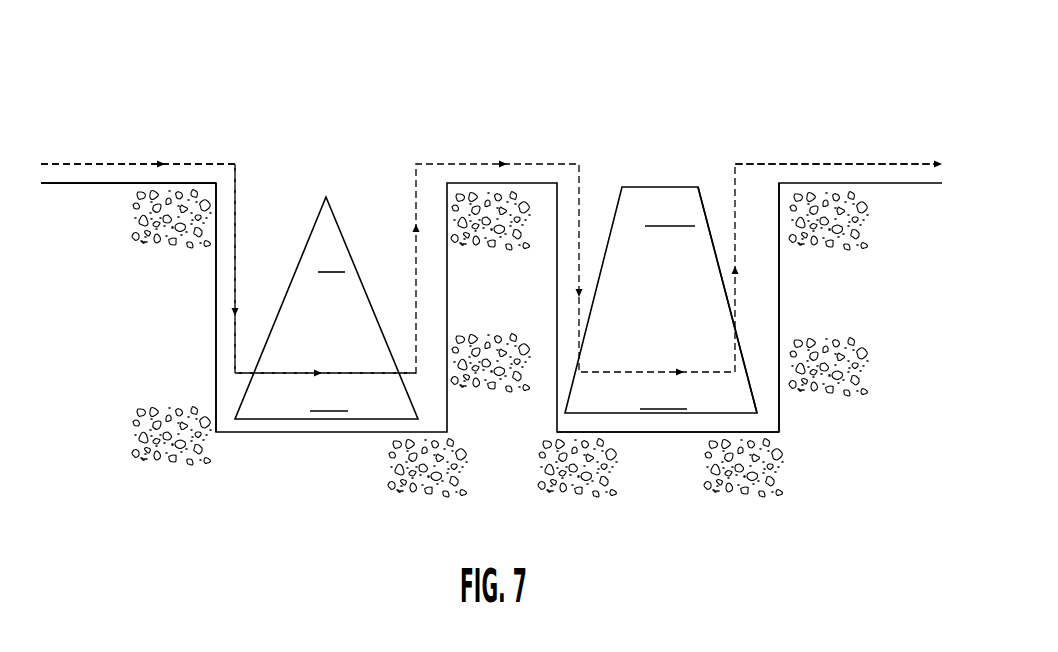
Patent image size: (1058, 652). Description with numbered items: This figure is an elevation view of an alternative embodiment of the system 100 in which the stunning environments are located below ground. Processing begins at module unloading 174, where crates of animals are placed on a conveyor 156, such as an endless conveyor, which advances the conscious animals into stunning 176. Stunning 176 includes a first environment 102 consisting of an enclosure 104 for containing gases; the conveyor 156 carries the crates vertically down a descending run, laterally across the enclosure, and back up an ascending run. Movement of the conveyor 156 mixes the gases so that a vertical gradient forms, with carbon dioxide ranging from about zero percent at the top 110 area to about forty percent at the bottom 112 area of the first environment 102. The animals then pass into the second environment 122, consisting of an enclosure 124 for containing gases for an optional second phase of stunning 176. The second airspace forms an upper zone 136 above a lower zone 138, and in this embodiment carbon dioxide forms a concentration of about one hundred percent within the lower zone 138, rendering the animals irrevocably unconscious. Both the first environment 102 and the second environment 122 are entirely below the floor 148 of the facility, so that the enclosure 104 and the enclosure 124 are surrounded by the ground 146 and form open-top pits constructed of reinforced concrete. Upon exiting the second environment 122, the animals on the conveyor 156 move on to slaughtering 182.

The system 100 is at (451, 98).
The first environment 102 is at (323, 142).
The enclosure 104 is at (214, 331).
The top area 110 is at (245, 259).
The bottom area 112 is at (224, 370).
The second environment 122 is at (663, 118).
The enclosure 124 is at (780, 310).
The upper zone 136 is at (743, 248).
The lower zone 138 is at (765, 416).
The ground 146 is at (137, 334).
The floor 148 is at (107, 184).
The conveyor 156 is at (124, 138).
The module unloading 174 is at (36, 116).
The stunning 176 is at (529, 94).
The slaughtering 182 is at (897, 105).